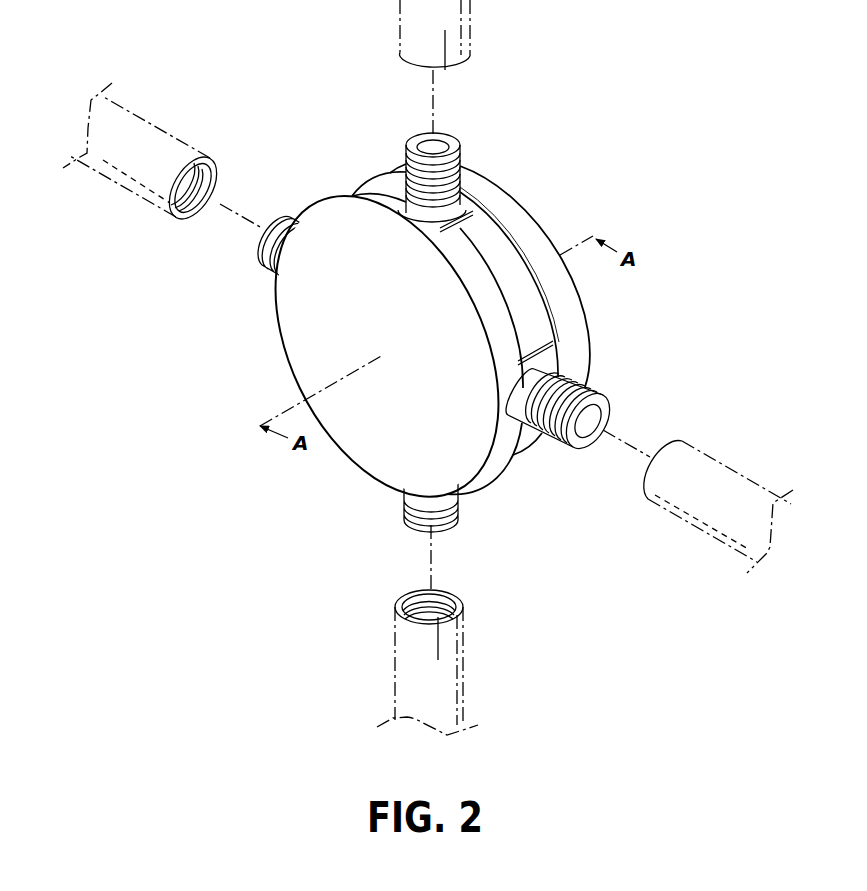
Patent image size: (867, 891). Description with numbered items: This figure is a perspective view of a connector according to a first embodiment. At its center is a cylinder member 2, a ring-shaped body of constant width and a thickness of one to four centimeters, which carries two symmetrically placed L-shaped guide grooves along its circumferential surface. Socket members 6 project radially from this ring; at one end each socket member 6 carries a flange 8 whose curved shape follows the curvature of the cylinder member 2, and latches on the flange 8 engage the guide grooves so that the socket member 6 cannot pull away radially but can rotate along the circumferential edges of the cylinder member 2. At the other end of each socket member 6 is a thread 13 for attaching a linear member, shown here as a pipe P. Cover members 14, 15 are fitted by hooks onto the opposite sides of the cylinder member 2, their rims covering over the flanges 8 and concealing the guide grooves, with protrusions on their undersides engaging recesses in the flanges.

The cylinder member 2 is at (509, 275).
The socket member 6 is at (468, 133).
The flange 8 is at (497, 198).
The thread 13 is at (397, 171).
The cover member 14 is at (308, 351).
The cover member 15 is at (578, 312).
The pipe P is at (408, 12).